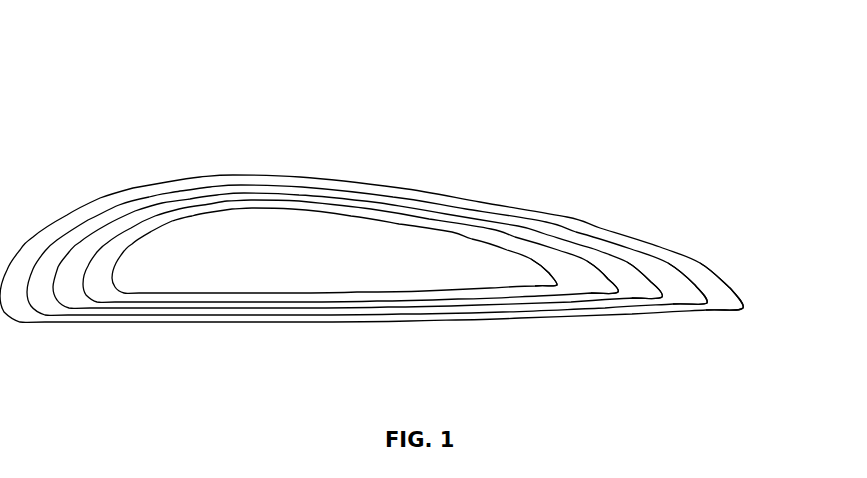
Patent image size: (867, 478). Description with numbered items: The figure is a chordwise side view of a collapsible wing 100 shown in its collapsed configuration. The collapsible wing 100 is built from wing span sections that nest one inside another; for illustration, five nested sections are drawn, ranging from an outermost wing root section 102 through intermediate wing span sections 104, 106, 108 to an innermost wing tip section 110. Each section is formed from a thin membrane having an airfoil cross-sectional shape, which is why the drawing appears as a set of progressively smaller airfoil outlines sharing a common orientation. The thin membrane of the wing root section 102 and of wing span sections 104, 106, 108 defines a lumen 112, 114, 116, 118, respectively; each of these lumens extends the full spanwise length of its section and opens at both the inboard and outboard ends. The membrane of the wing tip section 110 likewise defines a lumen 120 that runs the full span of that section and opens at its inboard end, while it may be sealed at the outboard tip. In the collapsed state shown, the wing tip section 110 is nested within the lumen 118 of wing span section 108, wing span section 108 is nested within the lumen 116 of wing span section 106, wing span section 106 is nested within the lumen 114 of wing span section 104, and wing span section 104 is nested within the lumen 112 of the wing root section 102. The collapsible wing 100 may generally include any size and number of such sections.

The collapsible wing 100 is at (245, 120).
The wing root section 102 is at (430, 195).
The wing span section 104 is at (398, 195).
The wing span section 106 is at (365, 200).
The wing span section 108 is at (330, 203).
The wing tip section 110 is at (295, 210).
The lumen 112 is at (712, 290).
The lumen 114 is at (665, 283).
The lumen 116 is at (628, 282).
The lumen 118 is at (572, 273).
The lumen 120 is at (513, 270).